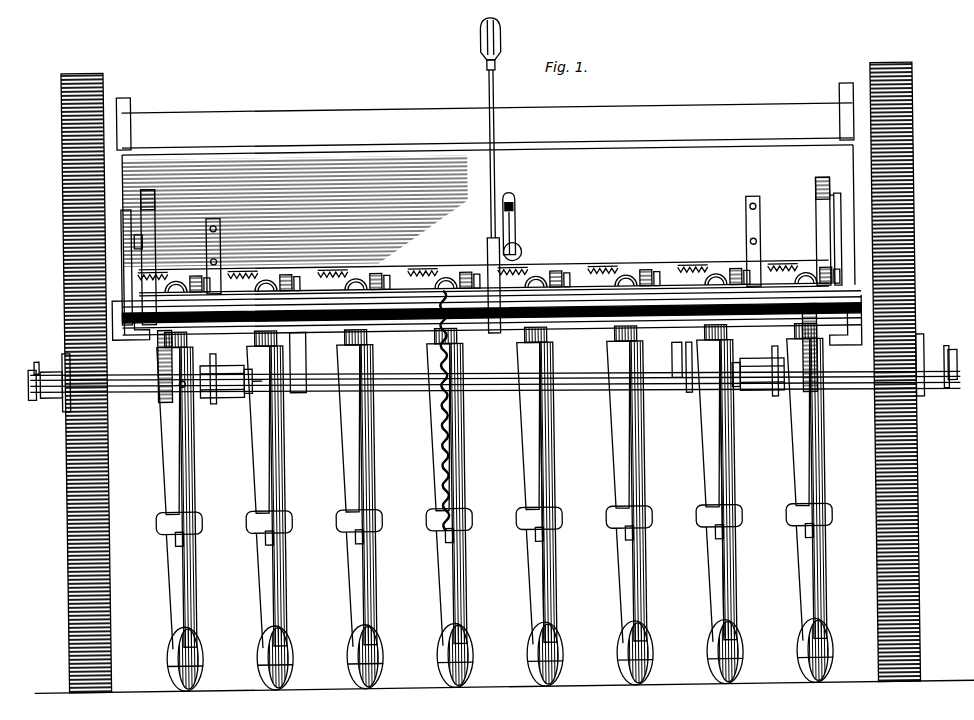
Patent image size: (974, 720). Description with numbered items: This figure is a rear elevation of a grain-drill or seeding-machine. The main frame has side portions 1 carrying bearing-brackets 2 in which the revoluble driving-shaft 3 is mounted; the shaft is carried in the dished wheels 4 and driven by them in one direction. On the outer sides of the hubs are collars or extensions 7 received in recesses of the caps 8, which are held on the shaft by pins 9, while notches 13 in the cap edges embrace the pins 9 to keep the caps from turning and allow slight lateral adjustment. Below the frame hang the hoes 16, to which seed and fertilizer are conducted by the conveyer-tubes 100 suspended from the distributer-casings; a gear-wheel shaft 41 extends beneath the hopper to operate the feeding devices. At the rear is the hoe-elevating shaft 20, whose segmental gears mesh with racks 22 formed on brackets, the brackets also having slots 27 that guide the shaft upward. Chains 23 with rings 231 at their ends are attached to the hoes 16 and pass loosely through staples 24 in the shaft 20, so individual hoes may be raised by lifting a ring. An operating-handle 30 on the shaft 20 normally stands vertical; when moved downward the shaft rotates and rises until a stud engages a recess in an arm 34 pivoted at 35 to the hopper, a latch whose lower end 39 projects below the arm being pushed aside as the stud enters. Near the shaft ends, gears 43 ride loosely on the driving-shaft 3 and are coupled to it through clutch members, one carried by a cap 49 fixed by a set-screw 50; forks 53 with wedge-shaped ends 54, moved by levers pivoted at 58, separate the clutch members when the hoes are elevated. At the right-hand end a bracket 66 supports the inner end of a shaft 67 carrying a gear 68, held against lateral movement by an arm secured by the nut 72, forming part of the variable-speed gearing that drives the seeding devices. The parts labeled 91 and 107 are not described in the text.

The side portions 1 is at (128, 312).
The bearing-brackets 2 is at (128, 394).
The driving-shaft 3 is at (300, 392).
The wheels 4 is at (491, 377).
The collars or extensions 7 is at (852, 322).
The caps 8 is at (48, 396).
The pins 9 is at (30, 392).
The notches 13 is at (36, 356).
The hoes 16 is at (432, 570).
The shaft 20 is at (492, 309).
The racks 22 is at (826, 252).
The flexible connections 23 is at (441, 445).
The eyes or staples 24 is at (547, 266).
The slots 27 is at (138, 231).
The operating-handle 30 is at (493, 176).
The arm 34 is at (514, 232).
The pivot 35 is at (525, 250).
The lower end of latch 39 is at (517, 214).
The shaft 41 is at (604, 270).
The gears 43 is at (160, 398).
The cap 49 is at (232, 394).
The set-screw 50 is at (256, 386).
The forks 53 is at (817, 364).
The wedge-shaped ends 54 is at (213, 400).
The pivot 58 is at (233, 280).
The bracket 66 is at (677, 382).
The shaft 67 is at (690, 398).
The gear 68 is at (179, 373).
The nut 72 is at (150, 244).
The clutch 91 is at (749, 394).
The conveyers or tubes 100 is at (548, 452).
The drop tube 107 is at (368, 352).
The rings 231 is at (448, 284).